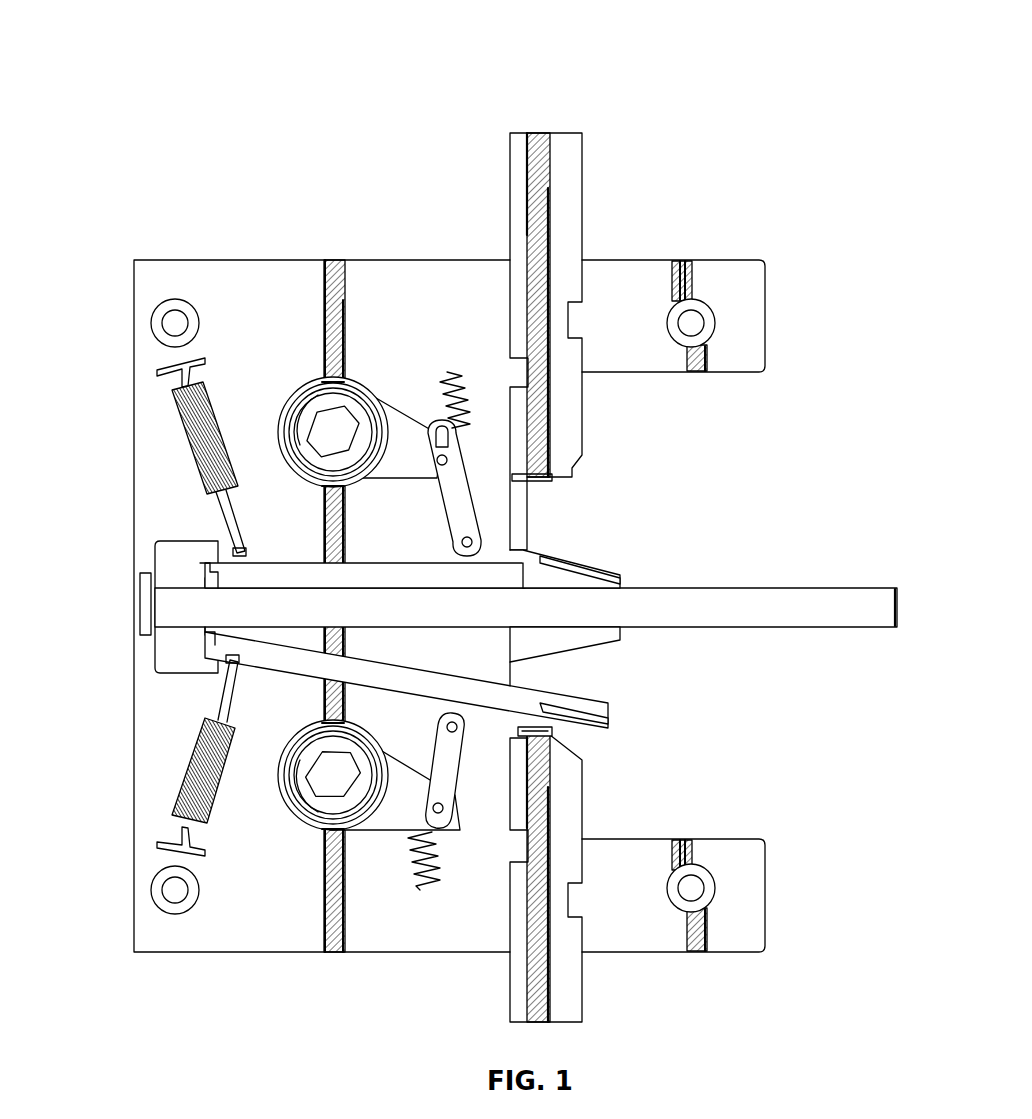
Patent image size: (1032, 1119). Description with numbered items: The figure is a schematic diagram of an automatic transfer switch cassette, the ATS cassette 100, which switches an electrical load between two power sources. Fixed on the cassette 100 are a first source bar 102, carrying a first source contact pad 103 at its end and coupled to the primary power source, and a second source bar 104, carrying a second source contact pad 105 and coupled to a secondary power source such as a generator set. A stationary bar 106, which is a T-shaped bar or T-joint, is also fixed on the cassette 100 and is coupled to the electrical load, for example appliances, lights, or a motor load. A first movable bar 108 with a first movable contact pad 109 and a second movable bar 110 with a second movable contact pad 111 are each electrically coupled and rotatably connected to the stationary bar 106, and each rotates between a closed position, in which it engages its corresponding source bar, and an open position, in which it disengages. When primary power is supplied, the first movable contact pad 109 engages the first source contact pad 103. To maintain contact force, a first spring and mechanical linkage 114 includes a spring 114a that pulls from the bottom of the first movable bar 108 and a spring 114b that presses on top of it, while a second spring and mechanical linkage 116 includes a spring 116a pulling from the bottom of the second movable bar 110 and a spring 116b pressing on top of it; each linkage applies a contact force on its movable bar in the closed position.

The ATS cassette 100 is at (790, 50).
The first source bar 102 is at (582, 181).
The first source contact pad 103 is at (540, 481).
The second source bar 104 is at (582, 968).
The second source contact pad 105 is at (566, 749).
The stationary bar 106 is at (713, 587).
The first movable bar 108 is at (520, 562).
The first movable contact pad 109 is at (597, 570).
The second movable bar 110 is at (520, 695).
The second movable contact pad 111 is at (590, 712).
The first spring and mechanical linkage 114 is at (205, 388).
The spring 114a is at (157, 403).
The spring 114b is at (460, 374).
The second spring and mechanical linkage 116 is at (205, 830).
The spring 116a is at (153, 776).
The spring 116b is at (455, 880).